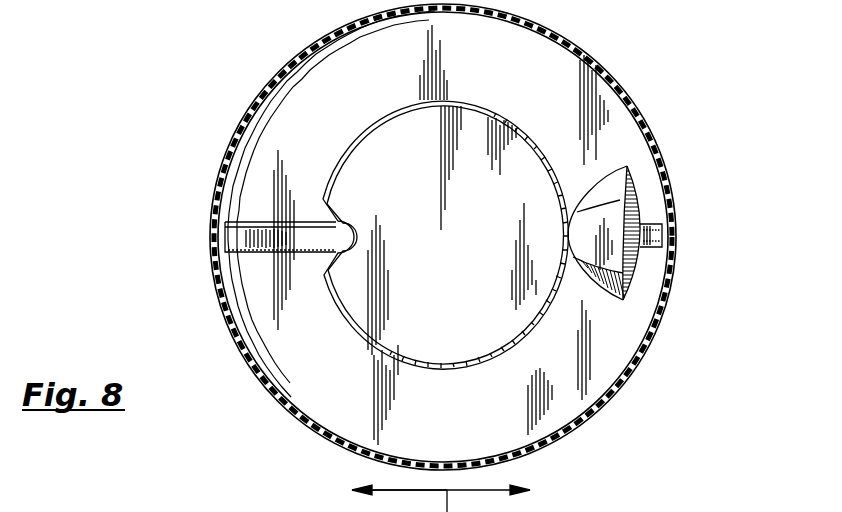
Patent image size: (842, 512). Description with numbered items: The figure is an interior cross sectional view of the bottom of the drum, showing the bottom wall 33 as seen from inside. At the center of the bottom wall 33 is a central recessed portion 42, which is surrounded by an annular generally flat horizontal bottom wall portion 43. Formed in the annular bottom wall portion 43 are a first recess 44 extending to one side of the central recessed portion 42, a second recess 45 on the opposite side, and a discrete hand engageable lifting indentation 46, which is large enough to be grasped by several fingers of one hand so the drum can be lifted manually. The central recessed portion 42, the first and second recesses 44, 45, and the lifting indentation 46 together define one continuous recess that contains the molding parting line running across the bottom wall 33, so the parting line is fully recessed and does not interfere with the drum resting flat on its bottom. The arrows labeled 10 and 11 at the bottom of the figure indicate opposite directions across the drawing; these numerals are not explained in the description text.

The bottom wall 33 is at (538, 58).
The central recessed portion 42 is at (477, 283).
The annular generally flat horizontal bottom wall portion 43 is at (467, 415).
The first recess 44 is at (237, 239).
The second recess 45 is at (662, 235).
The discrete hand engageable lifting indentation 46 is at (592, 283).
The first direction 10 is at (456, 496).
The second direction 11 is at (378, 493).